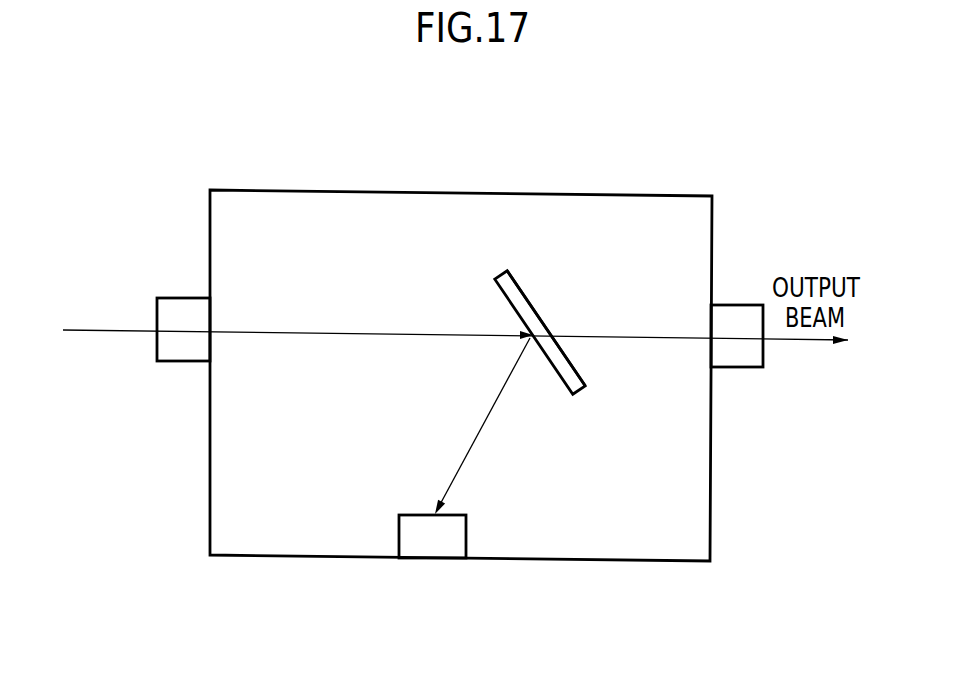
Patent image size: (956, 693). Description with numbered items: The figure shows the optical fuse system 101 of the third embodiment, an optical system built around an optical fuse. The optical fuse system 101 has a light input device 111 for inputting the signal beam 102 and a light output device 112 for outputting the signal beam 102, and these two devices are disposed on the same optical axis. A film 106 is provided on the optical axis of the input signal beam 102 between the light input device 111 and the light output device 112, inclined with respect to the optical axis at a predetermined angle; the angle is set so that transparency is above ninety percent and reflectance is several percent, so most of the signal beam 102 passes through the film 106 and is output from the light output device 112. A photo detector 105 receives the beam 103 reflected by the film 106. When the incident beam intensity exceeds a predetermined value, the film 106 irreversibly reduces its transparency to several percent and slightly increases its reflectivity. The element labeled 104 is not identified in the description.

The optical fuse system 101 is at (418, 191).
The signal beam 102 is at (93, 332).
The reflected beam 103 is at (478, 437).
The beam splitter 104 is at (597, 335).
The photo detector 105 is at (466, 540).
The film 106 is at (565, 385).
The light input device 111 is at (183, 307).
The light output device 112 is at (730, 370).